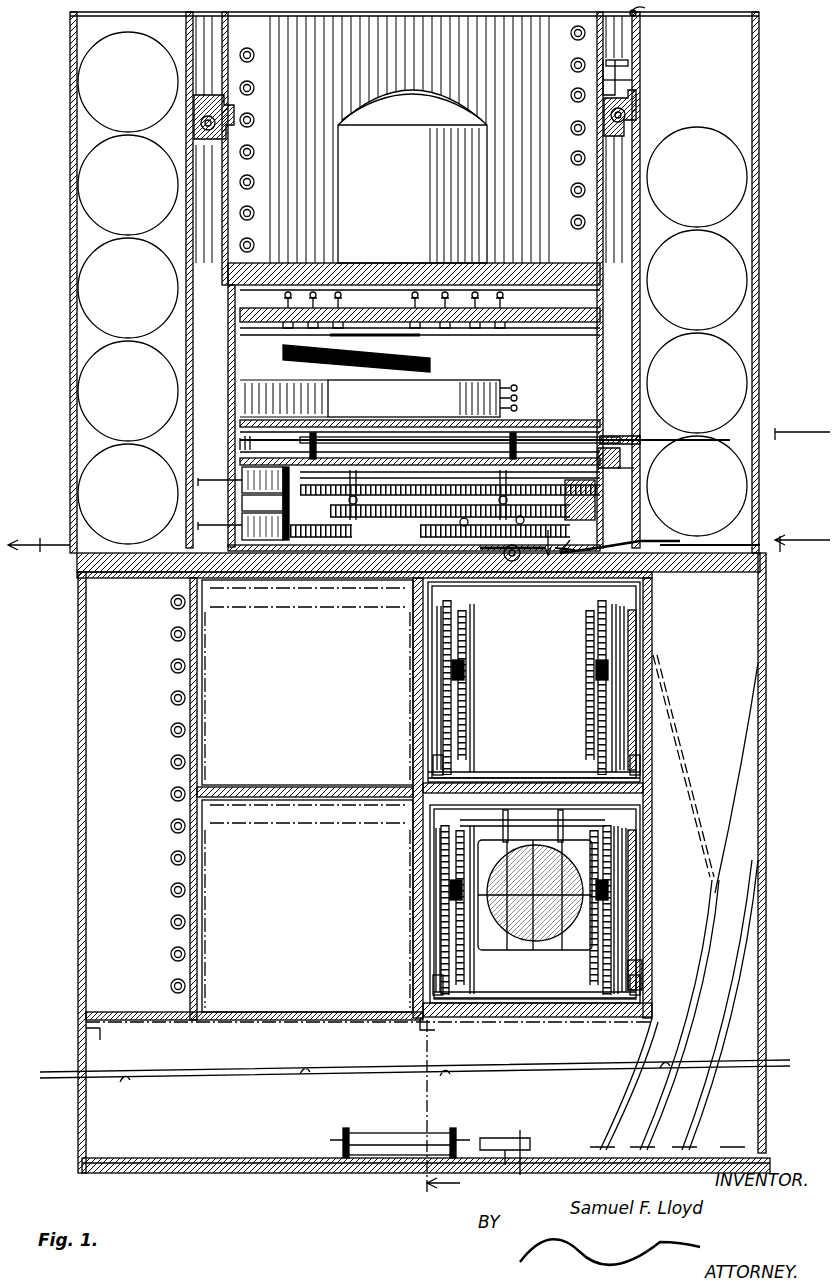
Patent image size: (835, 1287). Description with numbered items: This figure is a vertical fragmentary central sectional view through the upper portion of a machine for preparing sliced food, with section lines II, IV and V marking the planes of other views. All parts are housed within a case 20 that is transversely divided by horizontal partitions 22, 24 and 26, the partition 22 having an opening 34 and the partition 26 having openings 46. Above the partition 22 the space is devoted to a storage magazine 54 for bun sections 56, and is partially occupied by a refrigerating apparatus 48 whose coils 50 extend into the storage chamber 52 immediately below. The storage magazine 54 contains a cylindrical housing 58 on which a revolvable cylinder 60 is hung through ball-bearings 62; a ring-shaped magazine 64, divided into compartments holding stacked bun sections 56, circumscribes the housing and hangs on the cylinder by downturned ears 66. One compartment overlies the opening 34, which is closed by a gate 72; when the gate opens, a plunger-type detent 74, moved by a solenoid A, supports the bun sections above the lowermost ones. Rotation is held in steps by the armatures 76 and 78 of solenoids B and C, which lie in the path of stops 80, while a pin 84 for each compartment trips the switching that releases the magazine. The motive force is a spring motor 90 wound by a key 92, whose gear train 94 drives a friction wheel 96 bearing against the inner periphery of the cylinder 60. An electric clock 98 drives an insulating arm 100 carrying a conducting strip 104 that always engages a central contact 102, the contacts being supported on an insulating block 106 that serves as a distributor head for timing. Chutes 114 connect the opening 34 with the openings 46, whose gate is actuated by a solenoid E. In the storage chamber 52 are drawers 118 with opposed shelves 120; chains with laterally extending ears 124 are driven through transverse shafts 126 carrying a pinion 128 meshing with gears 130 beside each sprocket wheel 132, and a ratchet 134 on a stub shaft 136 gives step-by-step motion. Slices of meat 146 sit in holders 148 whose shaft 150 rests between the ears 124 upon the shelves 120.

The case 20 is at (78, 736).
The partition 22 is at (77, 562).
The partition 24 is at (112, 1012).
The partition 26 is at (186, 1158).
The opening 34 is at (738, 560).
The openings 46 is at (616, 1146).
The refrigerating apparatus 48 is at (412, 176).
The coils 50 is at (176, 726).
The storage chamber 52 is at (266, 906).
The storage magazine 54 is at (630, 184).
The bun sections 56 is at (726, 184).
The cylindrical housing 58 is at (600, 254).
The revolvable cylinder 60 is at (636, 75).
The ball-bearings 62 is at (634, 108).
The ring-shaped magazine 64 is at (760, 30).
The downturned ears 66 is at (636, 14).
The gate 72 is at (676, 556).
The detent 74 is at (574, 436).
The armature 76 is at (196, 480).
The armature 78 is at (196, 524).
The stops 80 is at (650, 520).
The pin 84 is at (617, 457).
The spring motor 90 is at (442, 508).
The key 92 is at (514, 564).
The gear train 94 is at (524, 466).
The friction wheel 96 is at (520, 508).
The electric clock 98 is at (378, 398).
The arm 100 is at (368, 350).
The central contact 102 is at (436, 308).
The strip of conducting material 104 is at (335, 306).
The block 106 is at (570, 302).
The chutes 114 is at (700, 920).
The drawers 118 is at (404, 658).
The shelves 120 is at (462, 640).
The ears 124 is at (468, 712).
The transverse shafts 126 is at (514, 768).
The pinion 128 is at (444, 771).
The gears 130 is at (436, 735).
The sprocket wheel 132 is at (436, 706).
The ratchet 134 is at (648, 655).
The stub shaft 136 is at (466, 672).
The slices of meat 146 is at (548, 940).
The holders 148 is at (497, 950).
The shaft 150 is at (596, 820).
The solenoid A is at (420, 450).
The solenoid B is at (265, 503).
The solenoid C is at (262, 517).
The solenoid E is at (385, 1134).
The section line II is at (497, 878).
The section line IV is at (419, 496).
The section line V is at (685, 536).